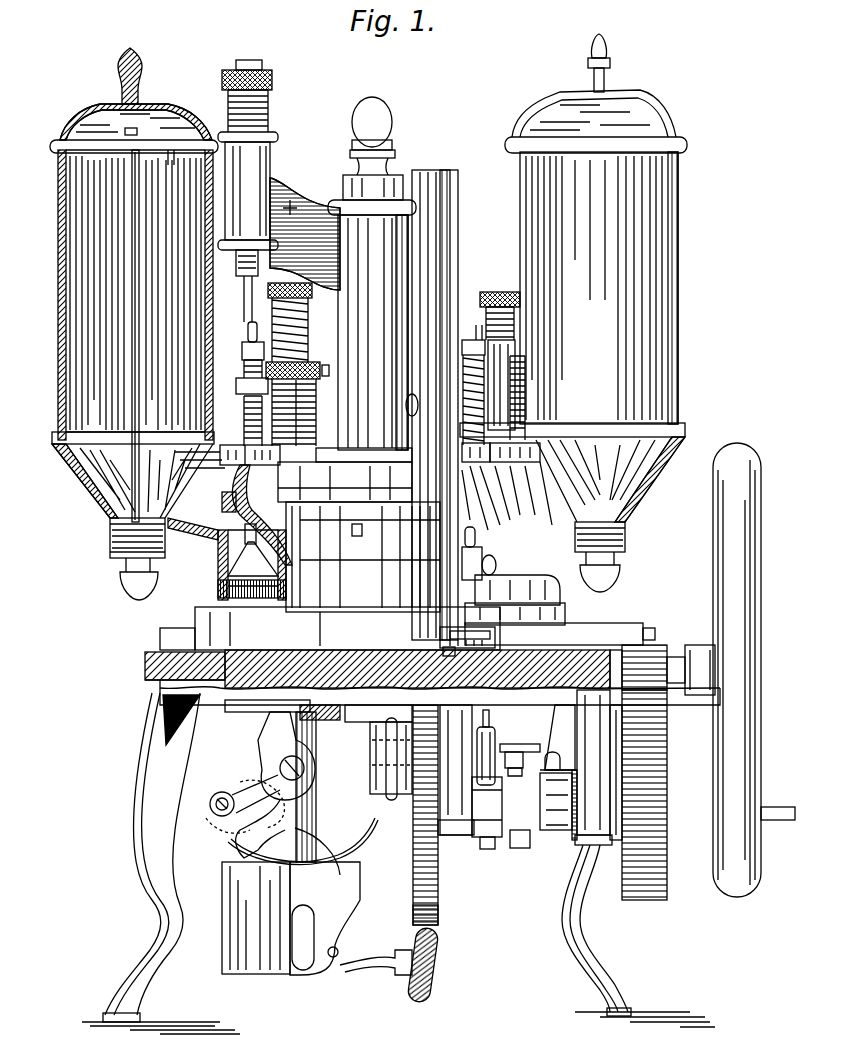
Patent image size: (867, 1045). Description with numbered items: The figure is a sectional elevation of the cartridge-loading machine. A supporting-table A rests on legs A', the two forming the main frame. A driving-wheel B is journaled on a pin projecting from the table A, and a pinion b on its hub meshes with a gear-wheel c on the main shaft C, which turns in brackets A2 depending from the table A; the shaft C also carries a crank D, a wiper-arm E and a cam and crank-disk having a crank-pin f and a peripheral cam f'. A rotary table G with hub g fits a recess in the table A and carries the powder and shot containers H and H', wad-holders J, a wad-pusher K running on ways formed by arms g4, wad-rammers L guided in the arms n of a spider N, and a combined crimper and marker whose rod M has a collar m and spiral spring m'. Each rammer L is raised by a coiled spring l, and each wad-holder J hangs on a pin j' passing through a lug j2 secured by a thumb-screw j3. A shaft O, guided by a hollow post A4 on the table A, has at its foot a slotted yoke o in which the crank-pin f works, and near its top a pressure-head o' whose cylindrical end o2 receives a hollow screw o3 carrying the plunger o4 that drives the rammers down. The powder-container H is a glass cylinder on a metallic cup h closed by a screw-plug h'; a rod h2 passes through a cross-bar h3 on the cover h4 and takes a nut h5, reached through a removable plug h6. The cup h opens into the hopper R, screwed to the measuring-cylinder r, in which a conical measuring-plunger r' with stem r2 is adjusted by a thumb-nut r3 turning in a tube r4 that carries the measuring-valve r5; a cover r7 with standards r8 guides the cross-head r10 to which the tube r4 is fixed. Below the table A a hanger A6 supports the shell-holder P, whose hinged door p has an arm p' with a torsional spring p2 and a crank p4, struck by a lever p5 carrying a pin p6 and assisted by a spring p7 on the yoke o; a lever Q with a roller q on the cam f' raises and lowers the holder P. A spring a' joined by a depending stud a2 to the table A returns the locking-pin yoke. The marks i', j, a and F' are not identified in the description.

The powder-container H is at (115, 295).
The shot container H' is at (586, 313).
The metallic cup h is at (133, 475).
The screw-plug h' is at (125, 559).
The rod h2 is at (140, 330).
The cross-bar h3 is at (172, 152).
The cover h4 is at (68, 130).
The nut h5 is at (138, 135).
The removable plug h6 is at (152, 102).
The slotted yoke o is at (395, 770).
The pressure-head o' is at (295, 213).
The cylinder o2 is at (248, 191).
The hollow screw o3 is at (262, 132).
The plunger o4 is at (238, 268).
The casting bracket i' is at (397, 309).
The wad-holder J is at (448, 254).
The stud j is at (422, 405).
The pin j' is at (507, 511).
The lug j2 is at (515, 600).
The thumb-screw j3 is at (496, 560).
The measuring-cylinder r is at (232, 548).
The measuring-plunger r' is at (253, 564).
The stem r2 is at (245, 530).
The thumb-nut r3 is at (236, 386).
The tube r4 is at (244, 410).
The measuring-valve r5 is at (222, 496).
The cover r7 is at (234, 446).
The standards r8 is at (252, 328).
The cross-head r10 is at (242, 350).
The hopper R is at (208, 536).
The wad-rammer L is at (376, 364).
The coiled spring l is at (310, 356).
The collar m is at (315, 361).
The crimper and marker rod M is at (306, 412).
The spiral spring m' is at (323, 413).
The hollow post A4 is at (342, 448).
The spider N is at (380, 505).
The spider arms n is at (363, 557).
The hub g is at (370, 581).
The shaft O is at (372, 273).
The wad-pusher K is at (495, 634).
The arms g4 is at (497, 646).
The rotary table G is at (407, 628).
The supporting-table A is at (432, 666).
The pinion b is at (650, 662).
The gear-wheel c is at (650, 890).
The driving-wheel B is at (746, 618).
The legs A' is at (398, 863).
The pin p6 is at (268, 708).
The shell-holder P is at (240, 772).
The door p is at (241, 791).
The torsional spring p2 is at (210, 803).
The arm p' is at (217, 825).
The crank p4 is at (262, 804).
The lever p5 is at (240, 846).
The spring p7 is at (360, 852).
The hanger A6 is at (222, 904).
The lever Q is at (351, 931).
The roller q is at (436, 984).
The crank-pin f is at (375, 749).
The rack F' is at (438, 815).
The peripheral cam f' is at (436, 914).
The wiper-arm E is at (478, 758).
The brackets A2 is at (525, 767).
The main shaft C is at (500, 840).
The spring a' is at (538, 737).
The depending stud a2 is at (516, 770).
The shaft a is at (520, 851).
The crank D is at (558, 832).